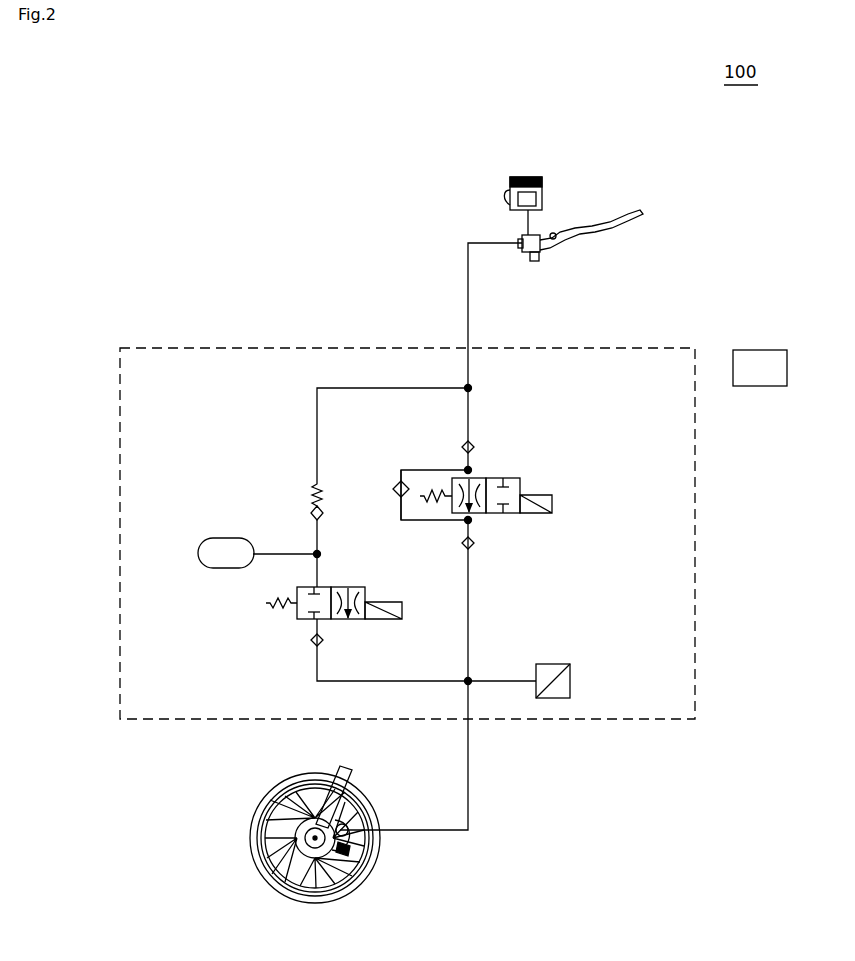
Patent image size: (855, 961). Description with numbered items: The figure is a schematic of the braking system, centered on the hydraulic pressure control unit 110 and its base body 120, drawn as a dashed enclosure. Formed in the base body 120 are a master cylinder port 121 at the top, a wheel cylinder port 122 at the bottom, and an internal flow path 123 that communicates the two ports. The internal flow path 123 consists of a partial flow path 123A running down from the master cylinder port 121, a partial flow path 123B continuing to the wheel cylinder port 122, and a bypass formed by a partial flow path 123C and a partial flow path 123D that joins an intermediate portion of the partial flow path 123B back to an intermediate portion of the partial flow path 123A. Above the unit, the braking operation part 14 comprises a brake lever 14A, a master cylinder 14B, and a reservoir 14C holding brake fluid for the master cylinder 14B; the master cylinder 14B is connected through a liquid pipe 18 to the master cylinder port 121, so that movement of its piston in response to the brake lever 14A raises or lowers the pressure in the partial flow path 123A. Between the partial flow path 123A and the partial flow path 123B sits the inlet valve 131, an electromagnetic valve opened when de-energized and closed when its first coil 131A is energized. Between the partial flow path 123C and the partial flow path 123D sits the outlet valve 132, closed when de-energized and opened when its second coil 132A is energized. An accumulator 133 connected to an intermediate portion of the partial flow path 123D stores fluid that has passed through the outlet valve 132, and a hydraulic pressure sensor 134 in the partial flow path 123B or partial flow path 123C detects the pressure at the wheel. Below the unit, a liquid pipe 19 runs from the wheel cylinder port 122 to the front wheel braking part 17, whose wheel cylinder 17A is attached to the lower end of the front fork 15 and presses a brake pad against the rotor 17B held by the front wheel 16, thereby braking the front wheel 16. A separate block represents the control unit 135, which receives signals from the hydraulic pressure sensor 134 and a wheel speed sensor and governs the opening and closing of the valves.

The braking operation part 14 is at (580, 188).
The brake lever 14A is at (628, 210).
The master cylinder 14B is at (530, 250).
The reservoir 14C is at (520, 176).
The front fork 15 is at (318, 780).
The front wheel 16 is at (266, 872).
The front wheel braking part 17 is at (370, 856).
The wheel cylinder 17A is at (353, 806).
The rotor 17B is at (340, 878).
The liquid pipe 18 is at (492, 240).
The liquid pipe 19 is at (478, 822).
The hydraulic pressure control unit 110 is at (208, 335).
The base body 120 is at (655, 725).
The master cylinder port 121 is at (460, 345).
The wheel cylinder port 122 is at (470, 722).
The internal flow path 123 is at (340, 375).
The partial flow path 123A is at (472, 418).
The partial flow path 123B is at (472, 645).
The partial flow path 123C is at (360, 680).
The partial flow path 123D is at (362, 393).
The inlet valve 131 is at (509, 528).
The first coil 131A is at (530, 496).
The outlet valve 132 is at (350, 578).
The second coil 132A is at (382, 601).
The accumulator 133 is at (225, 537).
The hydraulic pressure sensor 134 is at (573, 672).
The control unit 135 is at (770, 349).